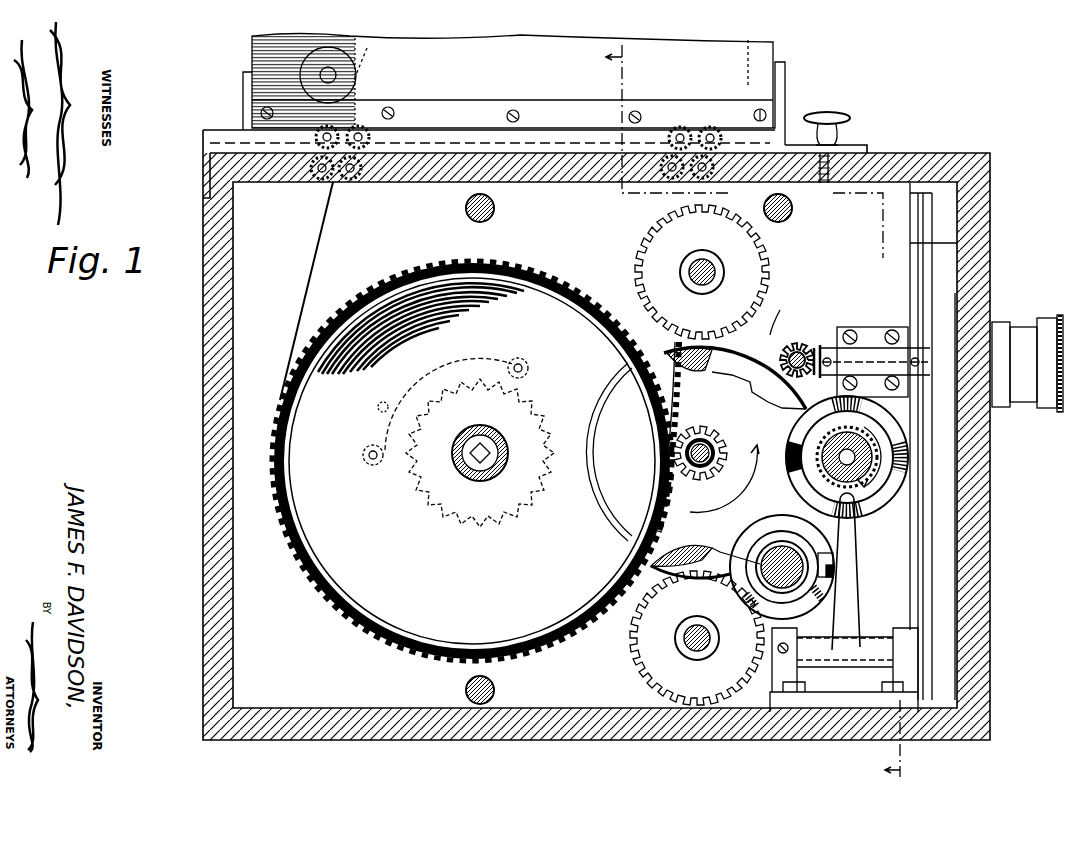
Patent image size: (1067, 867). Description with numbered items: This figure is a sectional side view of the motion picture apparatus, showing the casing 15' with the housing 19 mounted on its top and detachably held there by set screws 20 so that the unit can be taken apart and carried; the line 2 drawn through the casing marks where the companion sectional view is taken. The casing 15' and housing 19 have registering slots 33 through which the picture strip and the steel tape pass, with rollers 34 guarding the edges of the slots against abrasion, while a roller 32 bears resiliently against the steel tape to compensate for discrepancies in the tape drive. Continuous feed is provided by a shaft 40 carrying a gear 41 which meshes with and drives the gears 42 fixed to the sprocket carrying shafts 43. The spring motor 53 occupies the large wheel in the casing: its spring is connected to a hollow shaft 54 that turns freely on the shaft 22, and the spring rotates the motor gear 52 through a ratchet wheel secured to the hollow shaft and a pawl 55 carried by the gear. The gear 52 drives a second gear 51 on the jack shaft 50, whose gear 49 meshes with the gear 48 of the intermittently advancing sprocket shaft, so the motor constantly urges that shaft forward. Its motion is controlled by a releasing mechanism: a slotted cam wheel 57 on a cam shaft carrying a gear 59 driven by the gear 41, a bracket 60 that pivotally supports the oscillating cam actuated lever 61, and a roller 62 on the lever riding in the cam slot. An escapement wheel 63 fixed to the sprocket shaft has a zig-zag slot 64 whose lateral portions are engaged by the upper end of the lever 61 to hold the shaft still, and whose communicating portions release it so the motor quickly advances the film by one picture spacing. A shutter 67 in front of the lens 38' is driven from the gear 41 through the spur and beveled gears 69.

The casing 15' is at (570, 435).
The housing 19 is at (514, 90).
The set screws 20 is at (830, 115).
The section line 2- 2 is at (751, 418).
The shaft 22 is at (484, 432).
The roller 32 is at (358, 82).
The registering slots 33 is at (338, 185).
The rollers 34 is at (318, 188).
The lens 38' is at (1027, 347).
The shaft 40 is at (714, 442).
The gear 41 is at (782, 310).
The gears 42 is at (643, 237).
The sprocket carrying shafts 43 is at (702, 259).
The gear 48 is at (813, 441).
The gear 49 is at (725, 373).
The jack shaft 50 is at (713, 470).
The second gear 51 is at (727, 469).
The gear 52 is at (675, 413).
The spring motor 53 is at (488, 326).
The hollow shaft 54 is at (455, 450).
The pawl 55 is at (513, 364).
The slotted cam wheel 57 is at (745, 593).
The gear 59 is at (765, 602).
The bracket 60 is at (836, 704).
The oscillating cam actuated lever 61 is at (852, 578).
The roller 62 is at (838, 586).
The escapement wheel 63 is at (863, 501).
The zig-zag slot 64 is at (822, 479).
The shutter 67 is at (925, 266).
The spur and beveled gears 69 is at (808, 343).